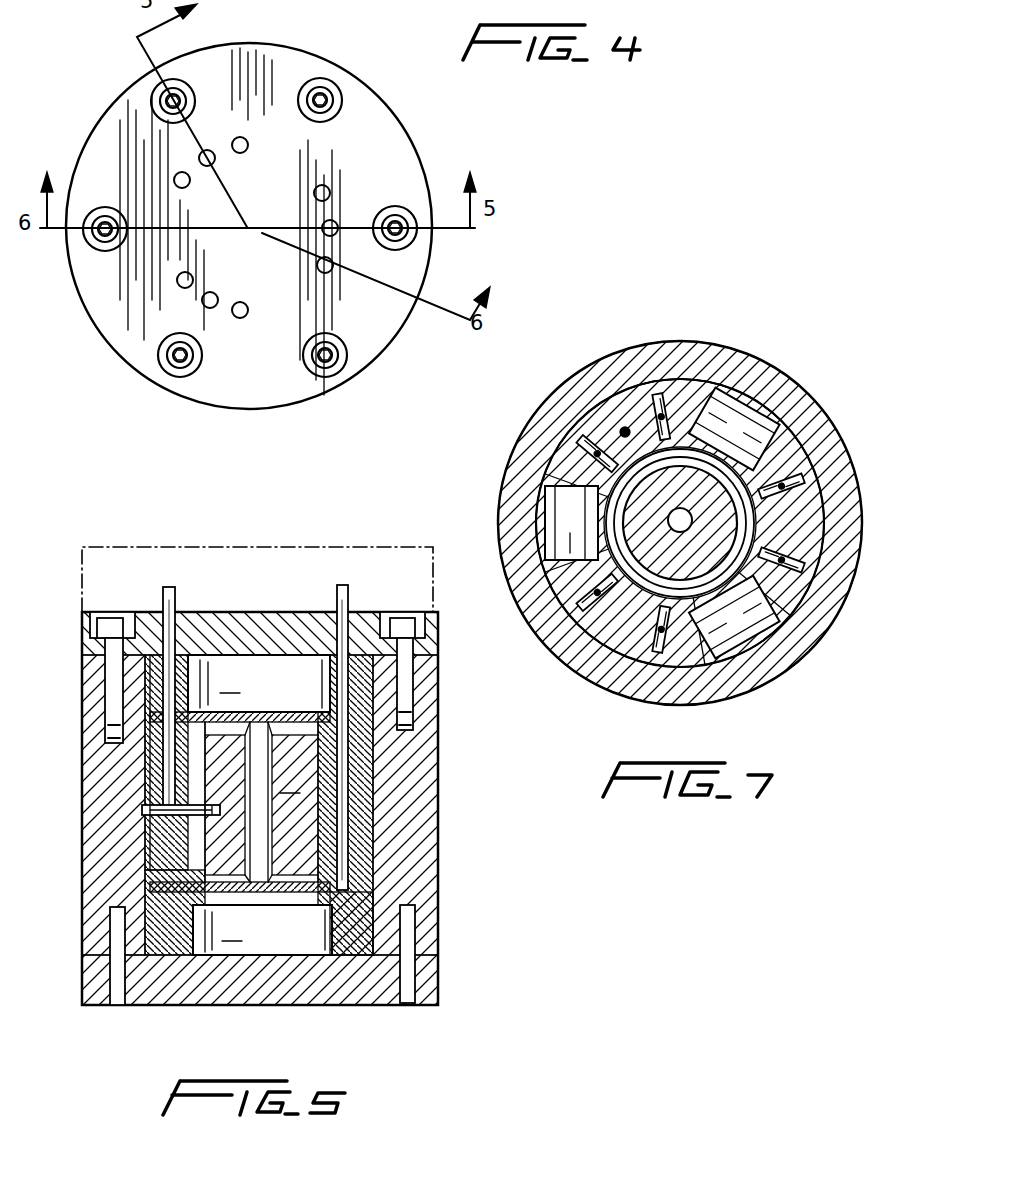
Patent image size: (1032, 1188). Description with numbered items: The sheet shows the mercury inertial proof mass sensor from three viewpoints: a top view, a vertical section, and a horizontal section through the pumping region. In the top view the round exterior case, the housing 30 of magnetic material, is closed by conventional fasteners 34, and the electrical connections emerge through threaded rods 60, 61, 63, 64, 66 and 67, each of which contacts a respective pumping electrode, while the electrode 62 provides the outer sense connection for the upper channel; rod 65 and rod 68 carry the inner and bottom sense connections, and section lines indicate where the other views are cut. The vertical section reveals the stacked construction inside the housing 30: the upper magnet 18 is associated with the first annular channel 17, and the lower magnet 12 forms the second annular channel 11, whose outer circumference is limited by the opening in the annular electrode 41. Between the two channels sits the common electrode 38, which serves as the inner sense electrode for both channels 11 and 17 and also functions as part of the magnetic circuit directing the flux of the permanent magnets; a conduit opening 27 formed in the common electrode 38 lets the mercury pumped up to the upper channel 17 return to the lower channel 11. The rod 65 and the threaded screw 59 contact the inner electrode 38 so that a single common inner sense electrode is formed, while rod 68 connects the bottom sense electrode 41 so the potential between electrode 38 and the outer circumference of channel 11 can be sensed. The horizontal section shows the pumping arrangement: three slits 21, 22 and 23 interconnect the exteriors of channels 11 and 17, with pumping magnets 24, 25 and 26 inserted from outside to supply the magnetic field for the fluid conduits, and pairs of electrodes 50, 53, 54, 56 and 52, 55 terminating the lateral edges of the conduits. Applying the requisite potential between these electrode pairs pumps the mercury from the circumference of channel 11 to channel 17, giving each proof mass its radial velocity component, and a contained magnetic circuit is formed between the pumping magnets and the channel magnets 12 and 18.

In FIG. 5, the second annular channel 11 is at (327, 872).
In FIG. 5, the magnet 12 is at (262, 930).
In FIG. 5, the first annular channel 17 is at (395, 740).
In FIG. 5, the magnet 18 is at (259, 683).
In FIG. 7, the slit 21 is at (800, 402).
In FIG. 7, the slit 22 is at (555, 592).
In FIG. 7, the slit 23 is at (703, 642).
In FIG. 7, the magnet 24 is at (712, 625).
In FIG. 7, the magnet 25 is at (560, 482).
In FIG. 7, the pumping magnet 26 is at (705, 380).
In FIG. 5, the conduit opening 27 is at (262, 782).
In FIG. 7, the housing 30 is at (790, 686).
In FIG. 4, the fasteners 34 is at (327, 85).
In FIG. 5, the fasteners 34 is at (112, 616).
In FIG. 5, the common electrode 38 is at (240, 802).
In FIG. 5, the annular electrode 41 is at (320, 890).
In FIG. 7, the electrode 50 is at (828, 445).
In FIG. 7, the electrode 52 is at (825, 555).
In FIG. 7, the electrode 53 is at (656, 404).
In FIG. 7, the electrode 54 is at (592, 455).
In FIG. 7, the electrode 55 is at (664, 628).
In FIG. 7, the electrode 56 is at (600, 602).
In FIG. 5, the threaded screw 59 is at (142, 810).
In FIG. 4, the threaded rod 60 is at (331, 272).
In FIG. 4, the threaded rod 61 is at (246, 318).
In FIG. 4, the electrode 62 is at (216, 294).
In FIG. 4, the threaded rod 63 is at (192, 274).
In FIG. 4, the threaded rod 64 is at (182, 172).
In FIG. 4, the rod 65 is at (208, 150).
In FIG. 7, the rod 65 is at (626, 426).
In FIG. 5, the rod 65 is at (170, 585).
In FIG. 4, the threaded rod 66 is at (248, 145).
In FIG. 4, the threaded rod 67 is at (328, 185).
In FIG. 4, the rod 68 is at (337, 222).
In FIG. 5, the rod 68 is at (338, 584).